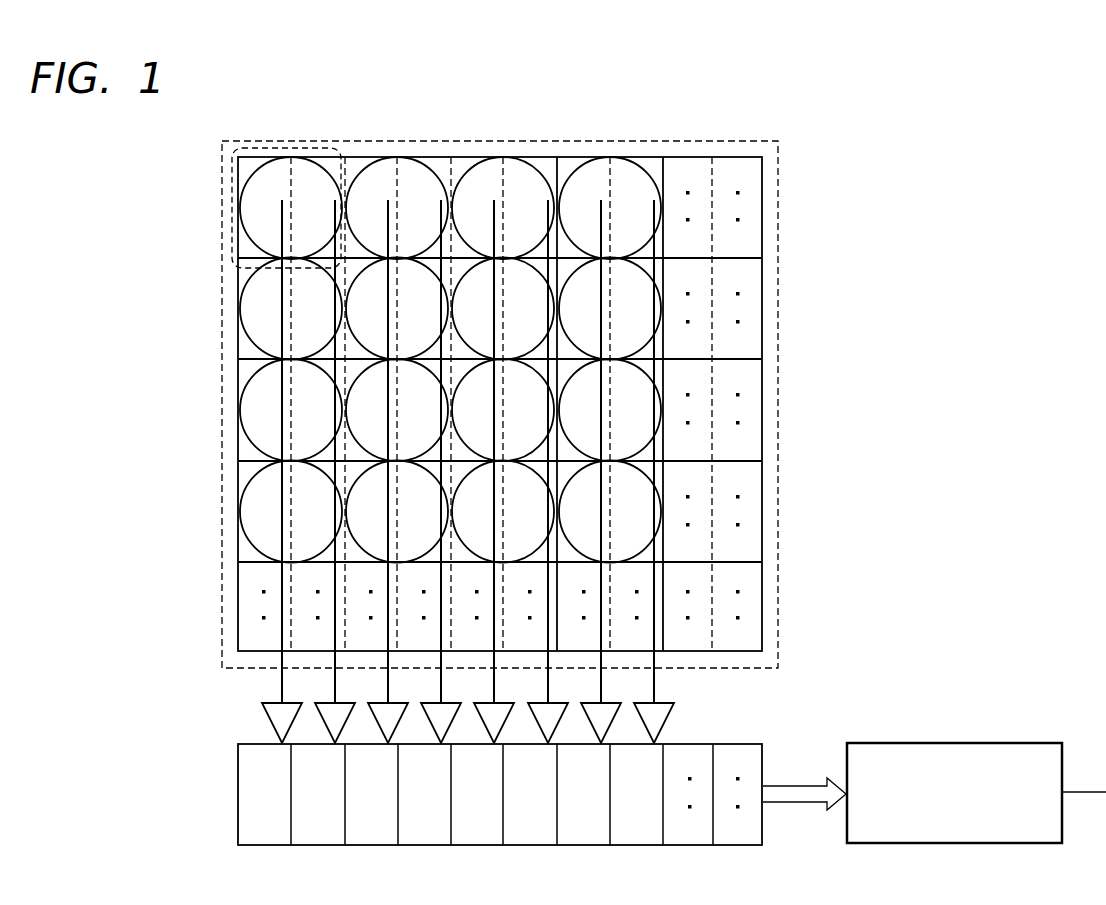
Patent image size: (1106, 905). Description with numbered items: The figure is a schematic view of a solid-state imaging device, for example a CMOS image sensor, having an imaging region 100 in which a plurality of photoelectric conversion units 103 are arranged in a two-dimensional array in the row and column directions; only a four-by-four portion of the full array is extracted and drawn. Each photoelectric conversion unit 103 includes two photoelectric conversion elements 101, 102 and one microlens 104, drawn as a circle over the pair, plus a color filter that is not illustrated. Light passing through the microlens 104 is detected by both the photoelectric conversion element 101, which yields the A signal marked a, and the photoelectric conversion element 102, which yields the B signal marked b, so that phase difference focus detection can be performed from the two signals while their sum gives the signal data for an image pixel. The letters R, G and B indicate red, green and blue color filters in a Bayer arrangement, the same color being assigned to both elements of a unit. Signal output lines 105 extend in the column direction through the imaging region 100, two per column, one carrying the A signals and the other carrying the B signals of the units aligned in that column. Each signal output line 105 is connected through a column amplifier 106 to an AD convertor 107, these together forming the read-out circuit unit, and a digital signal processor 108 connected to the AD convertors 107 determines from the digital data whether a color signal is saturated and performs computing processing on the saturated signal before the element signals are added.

The imaging region 100 is at (695, 141).
The photoelectric conversion element 101 is at (282, 173).
The photoelectric conversion element 102 is at (302, 173).
The photoelectric conversion unit 103 is at (222, 200).
The microlens 104 is at (255, 170).
The signal output line 105 is at (282, 686).
The column amplifier 106 is at (268, 724).
The AD convertor 107 is at (238, 773).
The digital signal processor 108 is at (958, 742).